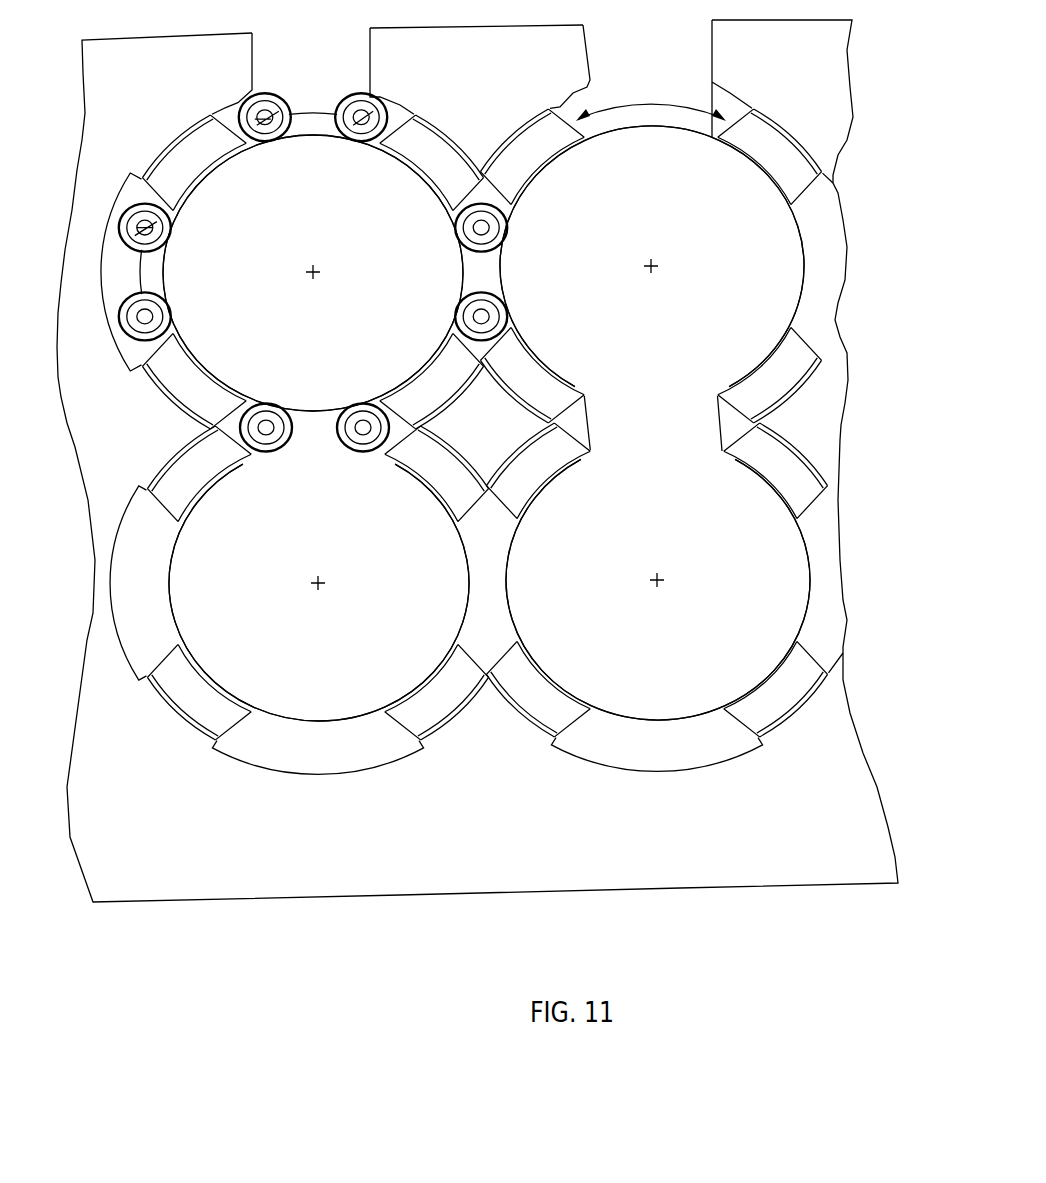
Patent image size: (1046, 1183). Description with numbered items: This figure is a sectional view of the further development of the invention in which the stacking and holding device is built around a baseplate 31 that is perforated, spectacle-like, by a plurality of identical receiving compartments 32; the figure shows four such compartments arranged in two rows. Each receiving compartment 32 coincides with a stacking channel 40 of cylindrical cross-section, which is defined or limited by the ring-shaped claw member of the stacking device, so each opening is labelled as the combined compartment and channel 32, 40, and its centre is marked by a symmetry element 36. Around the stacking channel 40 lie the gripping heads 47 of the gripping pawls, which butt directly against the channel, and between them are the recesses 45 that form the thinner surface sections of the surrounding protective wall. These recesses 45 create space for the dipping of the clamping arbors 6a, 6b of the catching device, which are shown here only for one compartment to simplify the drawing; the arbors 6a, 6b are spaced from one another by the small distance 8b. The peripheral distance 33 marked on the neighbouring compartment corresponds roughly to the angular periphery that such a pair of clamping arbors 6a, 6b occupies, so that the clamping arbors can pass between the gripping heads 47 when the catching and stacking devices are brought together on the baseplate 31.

The baseplate 31 is at (455, 878).
The receiving compartment 32 is at (486, 423).
The stacking channel 40 is at (486, 423).
The peripheral distance 33 is at (657, 103).
The symmetry element 36 is at (318, 278).
The recess 45 is at (120, 570).
The gripping head 47 is at (485, 424).
The clamping arbor 6a is at (267, 97).
The clamping arbor 6b is at (132, 212).
The small distance 8b is at (318, 112).